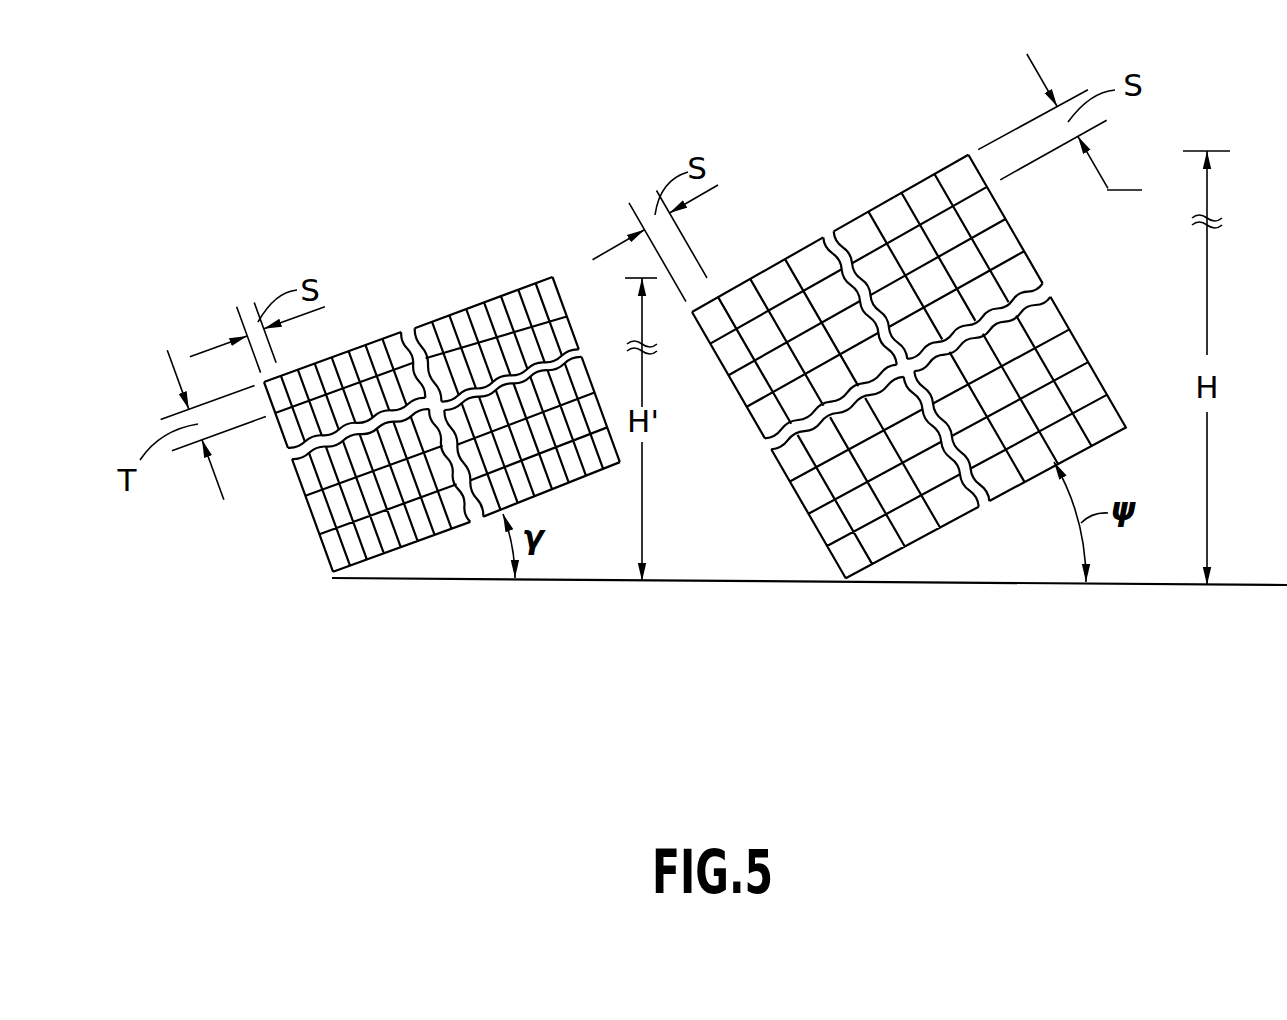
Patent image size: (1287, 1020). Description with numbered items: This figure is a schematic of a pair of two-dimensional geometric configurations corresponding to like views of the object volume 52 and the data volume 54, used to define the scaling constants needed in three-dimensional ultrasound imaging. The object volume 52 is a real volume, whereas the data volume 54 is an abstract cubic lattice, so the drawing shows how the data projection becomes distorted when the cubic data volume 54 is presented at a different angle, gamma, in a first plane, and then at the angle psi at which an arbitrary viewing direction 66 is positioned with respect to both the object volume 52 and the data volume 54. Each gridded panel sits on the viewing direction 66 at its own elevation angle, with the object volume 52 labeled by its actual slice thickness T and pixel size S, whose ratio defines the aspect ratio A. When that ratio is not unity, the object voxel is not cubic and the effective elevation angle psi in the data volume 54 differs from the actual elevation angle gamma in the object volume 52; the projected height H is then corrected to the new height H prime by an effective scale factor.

The object volume 52 is at (522, 288).
The data volume 54 is at (885, 200).
The viewing direction 66 is at (725, 580).